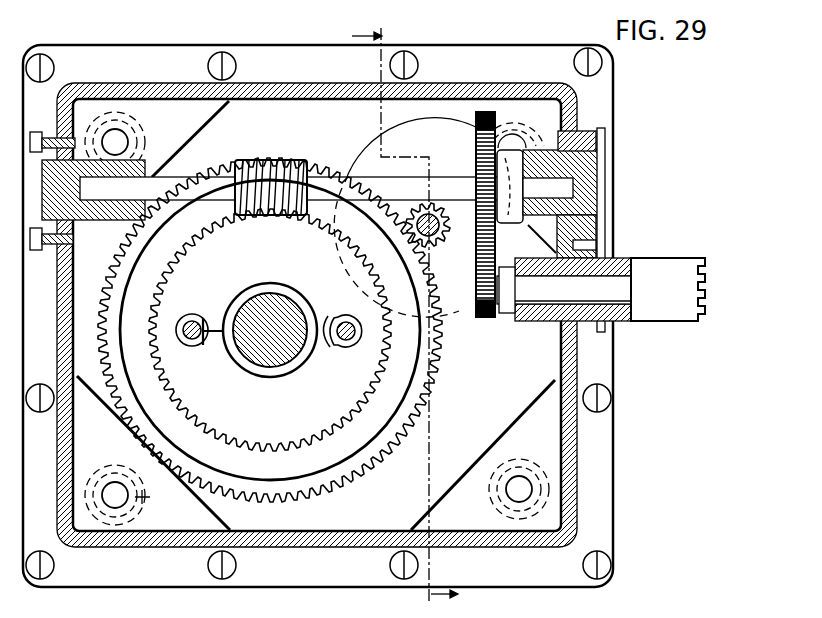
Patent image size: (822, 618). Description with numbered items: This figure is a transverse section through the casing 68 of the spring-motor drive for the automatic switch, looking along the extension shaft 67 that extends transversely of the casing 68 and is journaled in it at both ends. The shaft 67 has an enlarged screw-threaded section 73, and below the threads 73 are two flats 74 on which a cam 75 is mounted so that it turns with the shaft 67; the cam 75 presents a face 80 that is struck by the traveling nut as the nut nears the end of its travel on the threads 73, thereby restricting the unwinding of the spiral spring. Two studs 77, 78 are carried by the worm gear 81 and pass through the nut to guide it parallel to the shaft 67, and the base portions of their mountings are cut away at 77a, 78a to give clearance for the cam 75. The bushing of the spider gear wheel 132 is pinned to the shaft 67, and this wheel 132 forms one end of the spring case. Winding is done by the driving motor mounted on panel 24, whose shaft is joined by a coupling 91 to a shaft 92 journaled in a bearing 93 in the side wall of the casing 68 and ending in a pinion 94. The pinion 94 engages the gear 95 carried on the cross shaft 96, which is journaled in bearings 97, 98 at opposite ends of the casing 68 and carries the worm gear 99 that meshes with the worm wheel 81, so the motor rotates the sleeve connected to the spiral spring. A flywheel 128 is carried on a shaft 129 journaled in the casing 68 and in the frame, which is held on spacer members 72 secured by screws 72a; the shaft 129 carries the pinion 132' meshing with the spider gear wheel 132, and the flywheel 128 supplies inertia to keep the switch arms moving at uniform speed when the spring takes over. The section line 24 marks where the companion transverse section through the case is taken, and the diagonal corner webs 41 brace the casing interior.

The panel 24 is at (390, 318).
The mounting plate 41 is at (245, 118).
The extension shaft 67 is at (278, 372).
The casing 68 is at (184, 92).
The spacer members 72 is at (133, 497).
The screws 72a is at (125, 505).
The screw-threaded section 73 is at (250, 372).
The flats 74 is at (270, 294).
The cam 75 is at (240, 340).
The stud 77 is at (192, 314).
The cut-away portion 77a is at (205, 345).
The stud 78 is at (343, 349).
The cut-away portion 78a is at (342, 316).
The cam face 80 is at (212, 316).
The worm gear 81 is at (258, 448).
The coupling 91 is at (660, 268).
The shaft 92 is at (535, 304).
The bearing 93 is at (606, 268).
The pinion 94 is at (501, 318).
The gear 95 is at (478, 188).
The shaft 96 is at (350, 188).
The bearing 97 is at (143, 155).
The bearing 98 is at (602, 165).
The worm gear 99 is at (278, 168).
The flywheel 128 is at (476, 308).
The shaft 129 is at (433, 246).
The spider gear wheel 132 is at (270, 334).
The pinion 132' is at (396, 227).